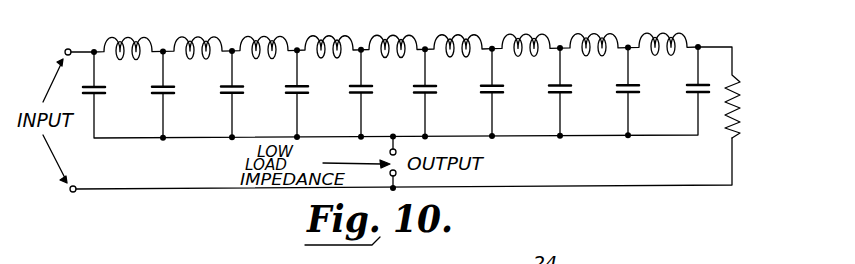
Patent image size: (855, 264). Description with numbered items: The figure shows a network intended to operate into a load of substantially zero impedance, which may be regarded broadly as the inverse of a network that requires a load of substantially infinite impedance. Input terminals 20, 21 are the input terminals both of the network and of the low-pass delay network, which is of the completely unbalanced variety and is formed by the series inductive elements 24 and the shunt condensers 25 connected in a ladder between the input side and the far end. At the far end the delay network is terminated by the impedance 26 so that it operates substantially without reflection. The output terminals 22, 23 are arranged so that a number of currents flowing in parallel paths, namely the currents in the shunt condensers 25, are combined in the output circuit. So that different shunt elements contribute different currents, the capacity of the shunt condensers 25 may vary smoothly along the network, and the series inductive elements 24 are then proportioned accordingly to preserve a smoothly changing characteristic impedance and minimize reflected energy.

The input terminal 20 is at (66, 48).
The input terminal 21 is at (70, 193).
The output terminal 22 is at (390, 152).
The output terminal 23 is at (396, 174).
The series inductive elements 24 is at (453, 37).
The shunt condensers 25 is at (240, 95).
The terminating impedance 26 is at (742, 112).